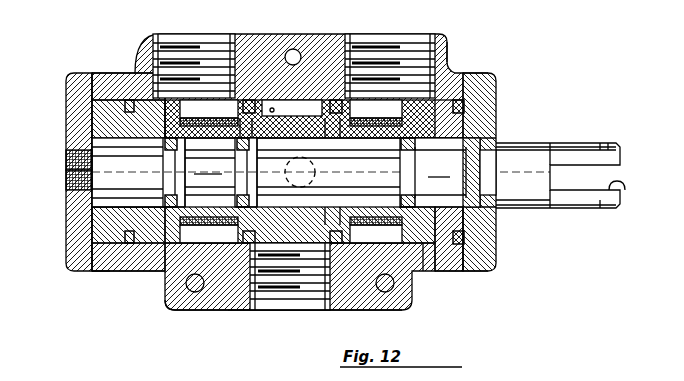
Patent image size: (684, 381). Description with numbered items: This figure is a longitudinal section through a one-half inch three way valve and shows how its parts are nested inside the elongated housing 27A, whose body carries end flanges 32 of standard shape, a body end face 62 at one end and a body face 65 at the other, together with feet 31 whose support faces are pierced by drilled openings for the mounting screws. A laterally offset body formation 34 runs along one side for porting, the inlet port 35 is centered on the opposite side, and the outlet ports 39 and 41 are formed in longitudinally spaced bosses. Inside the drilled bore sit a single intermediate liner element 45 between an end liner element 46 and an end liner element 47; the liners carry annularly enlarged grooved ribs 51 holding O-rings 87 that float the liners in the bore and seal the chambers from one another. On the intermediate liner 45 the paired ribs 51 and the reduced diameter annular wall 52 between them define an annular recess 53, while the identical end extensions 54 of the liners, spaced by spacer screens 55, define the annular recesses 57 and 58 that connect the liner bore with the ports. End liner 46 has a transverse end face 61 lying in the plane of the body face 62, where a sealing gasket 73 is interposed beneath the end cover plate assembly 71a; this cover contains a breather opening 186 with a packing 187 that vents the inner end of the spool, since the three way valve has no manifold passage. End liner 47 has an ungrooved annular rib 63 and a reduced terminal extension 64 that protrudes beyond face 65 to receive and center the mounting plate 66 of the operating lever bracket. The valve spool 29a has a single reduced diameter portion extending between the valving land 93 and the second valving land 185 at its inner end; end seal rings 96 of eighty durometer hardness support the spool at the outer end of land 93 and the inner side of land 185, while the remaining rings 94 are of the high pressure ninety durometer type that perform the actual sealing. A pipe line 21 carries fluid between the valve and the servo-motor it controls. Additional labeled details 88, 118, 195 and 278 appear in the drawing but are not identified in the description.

The pipe line 21 is at (146, 287).
The housing 27A is at (170, 310).
The valve spool 29a is at (518, 145).
The feet 31 is at (189, 313).
The end flange 32 is at (100, 268).
The body formation 34 is at (445, 40).
The inlet port 35 is at (272, 312).
The outlet port 39 is at (148, 42).
The outlet port 41 is at (442, 66).
The intermediate liner element 45 is at (349, 186).
The end liner element 46 is at (100, 117).
The end liner element 47 is at (496, 125).
The grooved rib 51 is at (100, 110).
The annular wall 52 is at (250, 137).
The annular recess 53 is at (292, 109).
The end extension 54 is at (224, 104).
The spacer screen 55 is at (180, 230).
The annular recess 57 is at (160, 62).
The annular recess 58 is at (466, 70).
The end face 61 is at (95, 222).
The end face 62 is at (490, 272).
The annular rib 63 is at (490, 80).
The terminal extension 64 is at (489, 222).
The body face 65 is at (85, 258).
The mounting plate 66 is at (485, 252).
The end cover plate assembly 71a is at (90, 206).
The sealing gasket 73 is at (94, 74).
The O-ring 87 is at (125, 102).
The right end cap 88 is at (497, 95).
The valving land 93 is at (440, 172).
The O-ring 94 is at (321, 172).
The O-ring 96 is at (167, 182).
The rod tip 118 is at (617, 200).
The valving land 185 is at (209, 168).
The breather opening 186 is at (68, 163).
The packing 187 is at (68, 178).
The hole 195 is at (294, 48).
The flange 278 is at (230, 312).